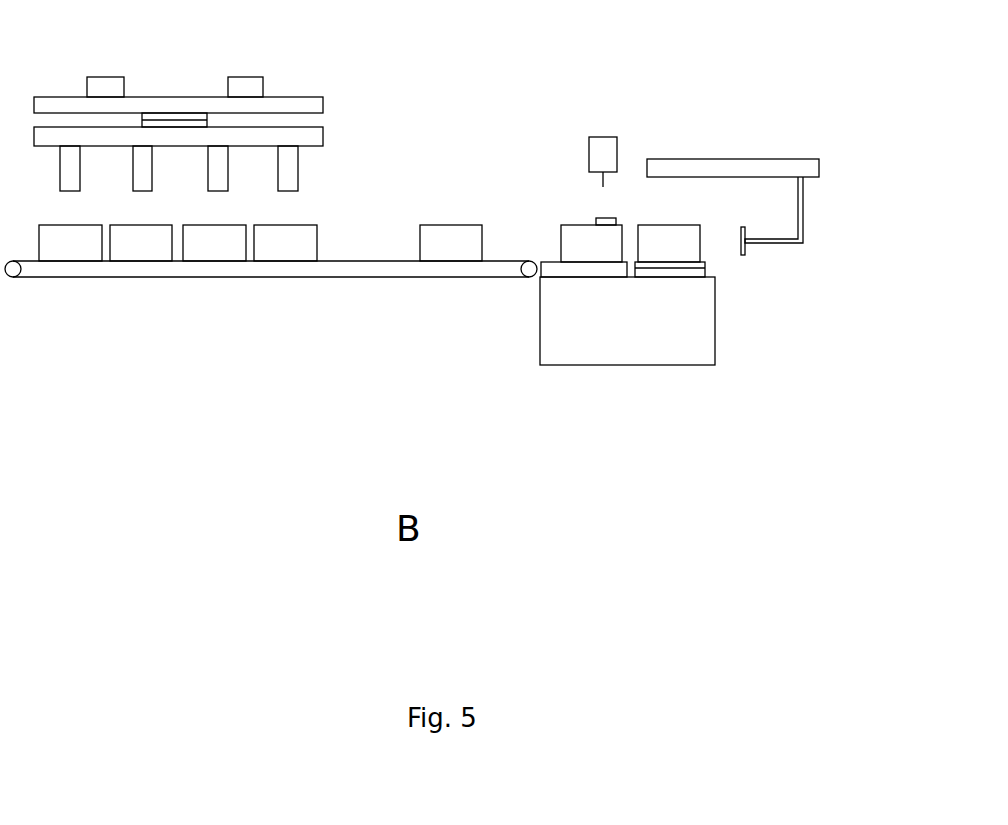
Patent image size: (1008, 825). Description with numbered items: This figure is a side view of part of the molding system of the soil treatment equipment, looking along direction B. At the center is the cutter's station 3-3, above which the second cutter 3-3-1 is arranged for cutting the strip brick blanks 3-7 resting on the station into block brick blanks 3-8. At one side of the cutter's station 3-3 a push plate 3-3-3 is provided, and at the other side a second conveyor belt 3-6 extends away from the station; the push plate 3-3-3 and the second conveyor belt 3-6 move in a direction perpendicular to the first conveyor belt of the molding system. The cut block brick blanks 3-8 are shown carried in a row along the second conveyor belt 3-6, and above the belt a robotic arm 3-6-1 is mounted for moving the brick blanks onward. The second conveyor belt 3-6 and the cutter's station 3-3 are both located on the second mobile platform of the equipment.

The robotic arm 3-6-1 is at (186, 96).
The block brick blanks 3-8 is at (256, 312).
The second conveyor belt 3-6 is at (271, 330).
The cutter's station 3-3 is at (577, 237).
The second cutter 3-3-1 is at (537, 93).
The strip brick blanks 3-7 is at (729, 323).
The push plate 3-3-3 is at (780, 267).